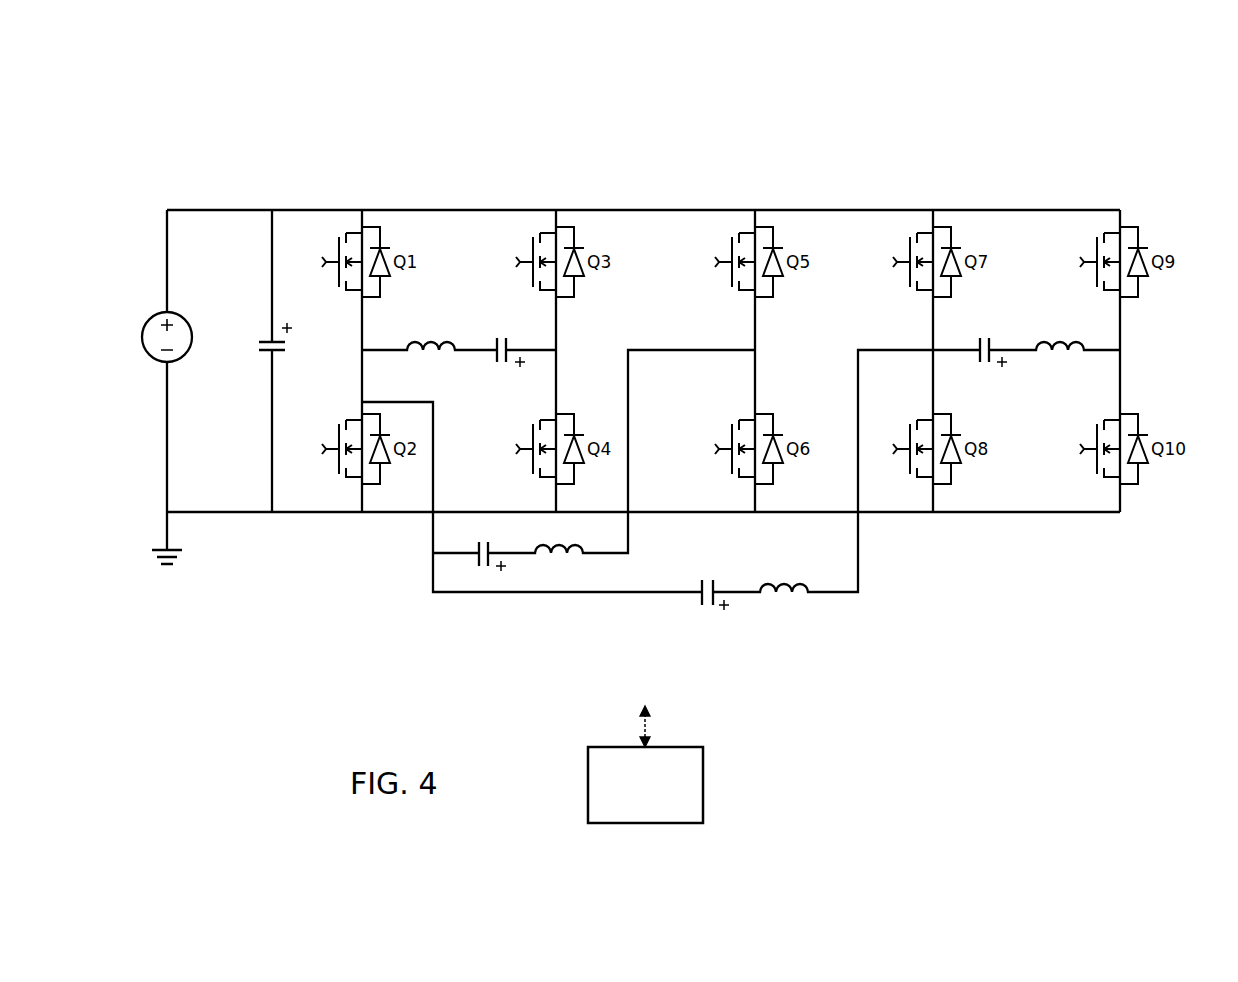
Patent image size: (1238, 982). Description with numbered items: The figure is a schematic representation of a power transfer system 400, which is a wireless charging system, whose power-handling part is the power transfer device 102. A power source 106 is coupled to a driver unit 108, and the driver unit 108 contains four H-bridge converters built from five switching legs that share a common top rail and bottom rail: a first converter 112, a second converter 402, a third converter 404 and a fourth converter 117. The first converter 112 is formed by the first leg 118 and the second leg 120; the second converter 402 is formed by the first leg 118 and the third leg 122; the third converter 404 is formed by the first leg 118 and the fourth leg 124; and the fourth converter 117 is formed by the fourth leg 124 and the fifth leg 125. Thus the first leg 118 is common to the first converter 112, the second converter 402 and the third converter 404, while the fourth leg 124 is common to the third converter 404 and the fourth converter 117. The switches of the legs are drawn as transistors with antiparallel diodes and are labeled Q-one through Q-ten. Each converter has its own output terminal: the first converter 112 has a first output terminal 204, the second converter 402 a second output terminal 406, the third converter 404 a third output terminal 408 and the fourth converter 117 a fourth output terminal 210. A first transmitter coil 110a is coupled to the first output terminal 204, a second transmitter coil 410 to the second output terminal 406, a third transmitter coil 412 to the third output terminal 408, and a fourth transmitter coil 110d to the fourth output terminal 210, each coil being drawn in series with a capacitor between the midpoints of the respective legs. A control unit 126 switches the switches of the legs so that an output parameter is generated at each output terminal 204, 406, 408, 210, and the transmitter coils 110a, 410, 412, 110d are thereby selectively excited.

The power transfer device 102 is at (143, 689).
The power source 106 is at (148, 322).
The driver unit 108 is at (263, 81).
The first transmitter coil 110a is at (430, 343).
The fourth transmitter coil 110d is at (1060, 343).
The first converter 112 is at (328, 203).
The fourth converter 117 is at (893, 203).
The first leg 118 is at (360, 503).
The second leg 120 is at (554, 503).
The third leg 122 is at (753, 503).
The fourth leg 124 is at (931, 503).
The fifth leg 125 is at (1118, 503).
The control unit 126 is at (704, 785).
The first output terminal 204 is at (372, 365).
The fourth output terminal 210 is at (943, 365).
The power transfer system 400 is at (1014, 764).
The second converter 402 is at (328, 164).
The third converter 404 is at (328, 119).
The second output terminal 406 is at (361, 635).
The third output terminal 408 is at (361, 670).
The second transmitter coil 410 is at (558, 545).
The third transmitter coil 412 is at (782, 585).